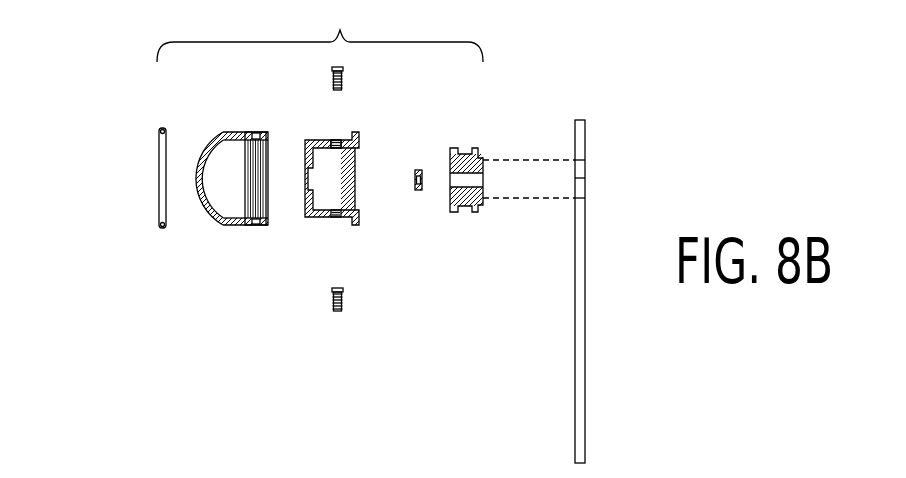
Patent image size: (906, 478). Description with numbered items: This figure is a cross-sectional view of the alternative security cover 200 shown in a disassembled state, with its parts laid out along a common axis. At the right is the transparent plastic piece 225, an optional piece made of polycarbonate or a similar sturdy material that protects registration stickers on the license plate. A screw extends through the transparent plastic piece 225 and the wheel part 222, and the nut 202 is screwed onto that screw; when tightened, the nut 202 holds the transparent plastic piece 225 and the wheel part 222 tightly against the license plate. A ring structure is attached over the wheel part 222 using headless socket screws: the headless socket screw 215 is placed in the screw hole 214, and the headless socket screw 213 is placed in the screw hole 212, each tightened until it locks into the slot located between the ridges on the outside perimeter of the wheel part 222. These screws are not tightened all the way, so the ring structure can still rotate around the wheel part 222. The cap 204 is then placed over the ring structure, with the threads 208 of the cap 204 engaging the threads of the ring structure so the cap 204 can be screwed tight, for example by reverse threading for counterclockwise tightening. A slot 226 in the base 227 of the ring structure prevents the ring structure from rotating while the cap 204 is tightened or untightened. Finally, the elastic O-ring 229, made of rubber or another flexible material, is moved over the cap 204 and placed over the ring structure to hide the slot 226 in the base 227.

The security cover 200 is at (320, 31).
The nut 202 is at (416, 171).
The cap 204 is at (245, 228).
The threads 208 is at (262, 208).
The screw hole 212 is at (336, 222).
The headless socket screw 213 is at (345, 298).
The screw hole 214 is at (341, 138).
The headless socket screw 215 is at (345, 76).
The wheel part 222 is at (497, 148).
The transparent plastic piece 225 is at (575, 360).
The slot 226 is at (147, 472).
The base 227 is at (73, 472).
The elastic O-ring 229 is at (163, 232).